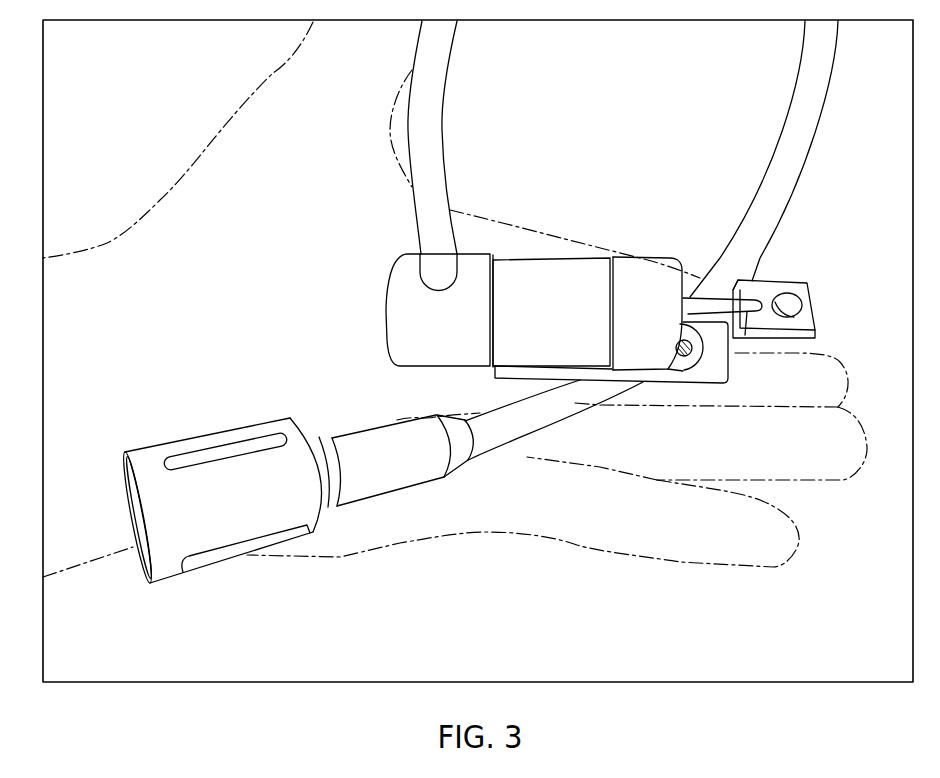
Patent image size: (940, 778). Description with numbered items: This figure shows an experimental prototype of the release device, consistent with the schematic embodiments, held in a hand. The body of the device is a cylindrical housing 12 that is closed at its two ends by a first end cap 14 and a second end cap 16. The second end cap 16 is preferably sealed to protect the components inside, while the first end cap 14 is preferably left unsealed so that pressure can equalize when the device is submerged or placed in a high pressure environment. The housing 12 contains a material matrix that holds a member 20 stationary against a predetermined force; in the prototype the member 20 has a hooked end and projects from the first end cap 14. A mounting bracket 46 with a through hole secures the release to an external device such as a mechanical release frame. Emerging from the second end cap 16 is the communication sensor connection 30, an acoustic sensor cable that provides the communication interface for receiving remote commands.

The housing 12 is at (548, 318).
The first end cap 14 is at (638, 340).
The second end cap 16 is at (390, 352).
The member 20 is at (752, 322).
The communication sensor connection 30 is at (215, 428).
The mounting bracket 46 is at (704, 380).